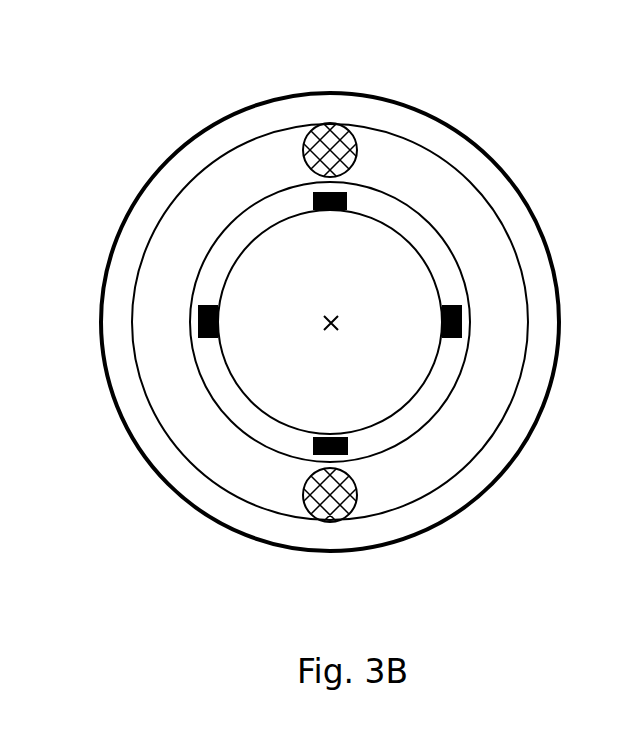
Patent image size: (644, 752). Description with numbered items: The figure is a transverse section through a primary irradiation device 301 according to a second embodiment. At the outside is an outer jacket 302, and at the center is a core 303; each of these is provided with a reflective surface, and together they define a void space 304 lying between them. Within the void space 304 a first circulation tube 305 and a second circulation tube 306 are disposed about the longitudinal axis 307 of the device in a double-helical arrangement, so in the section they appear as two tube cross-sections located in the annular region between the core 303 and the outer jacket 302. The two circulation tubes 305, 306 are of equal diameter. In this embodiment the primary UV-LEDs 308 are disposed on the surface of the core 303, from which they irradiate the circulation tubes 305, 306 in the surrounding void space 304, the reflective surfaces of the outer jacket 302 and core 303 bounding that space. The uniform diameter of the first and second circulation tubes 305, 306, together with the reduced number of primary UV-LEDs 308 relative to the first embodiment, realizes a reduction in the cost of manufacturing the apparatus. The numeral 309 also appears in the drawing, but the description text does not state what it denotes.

The primary irradiation device 301 is at (573, 111).
The outer jacket 302 is at (368, 552).
The core 303 is at (237, 256).
The void space 304 is at (473, 488).
The first circulation tube 305 is at (182, 407).
The second circulation tube 306 is at (451, 196).
The longitudinal axis 307 is at (330, 330).
The primary UV-LEDs 308 is at (312, 199).
The reference numeral 309 is at (4, 315).